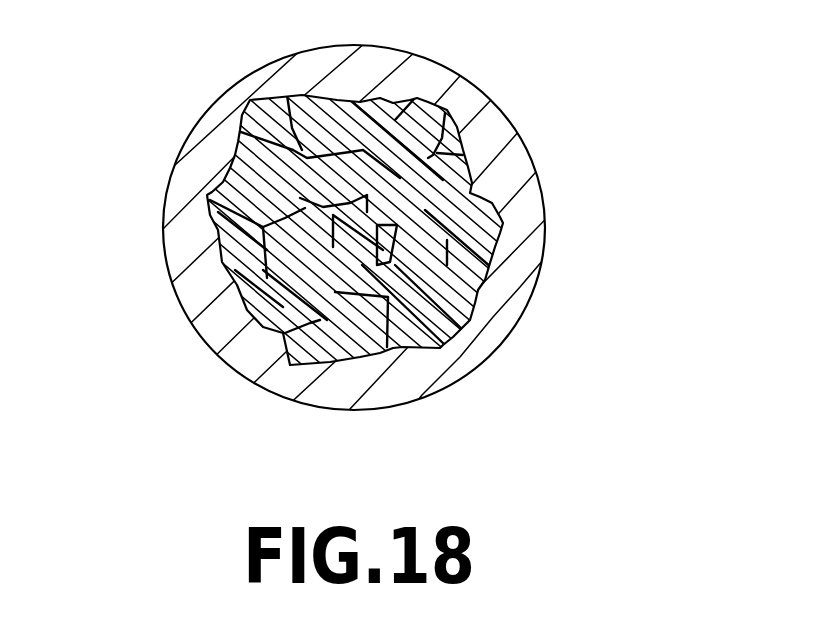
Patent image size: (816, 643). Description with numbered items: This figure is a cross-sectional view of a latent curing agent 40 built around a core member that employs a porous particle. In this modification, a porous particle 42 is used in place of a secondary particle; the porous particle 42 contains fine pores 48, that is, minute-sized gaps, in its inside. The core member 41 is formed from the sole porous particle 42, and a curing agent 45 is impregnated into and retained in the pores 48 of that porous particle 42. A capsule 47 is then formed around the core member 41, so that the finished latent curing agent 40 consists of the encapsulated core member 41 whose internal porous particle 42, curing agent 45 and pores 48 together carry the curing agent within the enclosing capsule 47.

The latent curing agent 40 is at (153, 132).
The core member 41 is at (653, 105).
The porous particle 42 is at (437, 124).
The curing agent 45 is at (483, 200).
The capsule 47 is at (437, 372).
The pores 48 is at (488, 283).